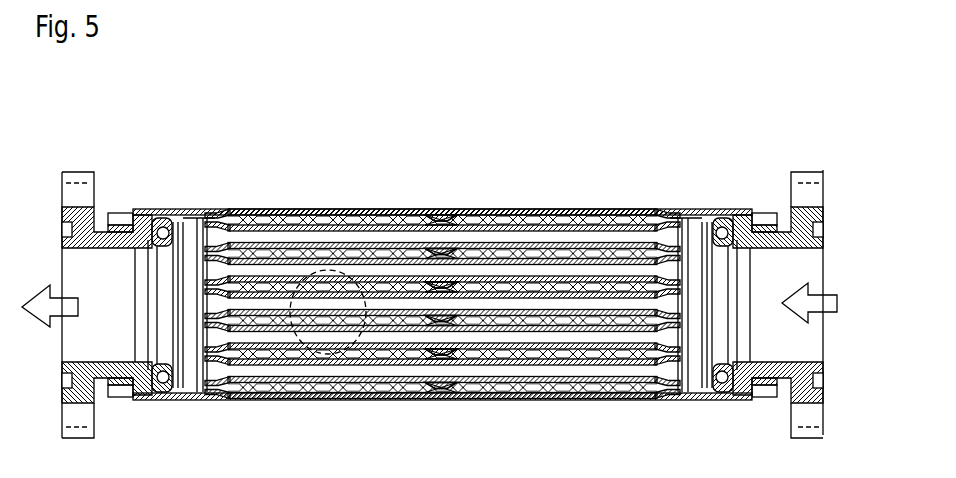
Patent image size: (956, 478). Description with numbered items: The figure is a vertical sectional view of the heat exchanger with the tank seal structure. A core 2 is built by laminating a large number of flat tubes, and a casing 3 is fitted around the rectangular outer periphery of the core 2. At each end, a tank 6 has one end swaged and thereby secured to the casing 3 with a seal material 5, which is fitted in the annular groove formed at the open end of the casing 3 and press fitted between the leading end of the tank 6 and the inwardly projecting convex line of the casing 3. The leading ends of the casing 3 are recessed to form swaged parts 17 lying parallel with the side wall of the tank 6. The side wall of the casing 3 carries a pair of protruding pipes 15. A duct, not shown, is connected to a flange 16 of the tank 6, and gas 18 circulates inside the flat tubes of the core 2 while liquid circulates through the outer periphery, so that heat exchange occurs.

The core 2 is at (205, 362).
The casing 3 is at (318, 208).
The seal material 5 is at (160, 214).
The tank 6 is at (80, 172).
The protruding pipes 15 is at (527, 212).
The flange 16 is at (62, 215).
The swaged parts 17 is at (122, 213).
The gas 18 is at (832, 292).